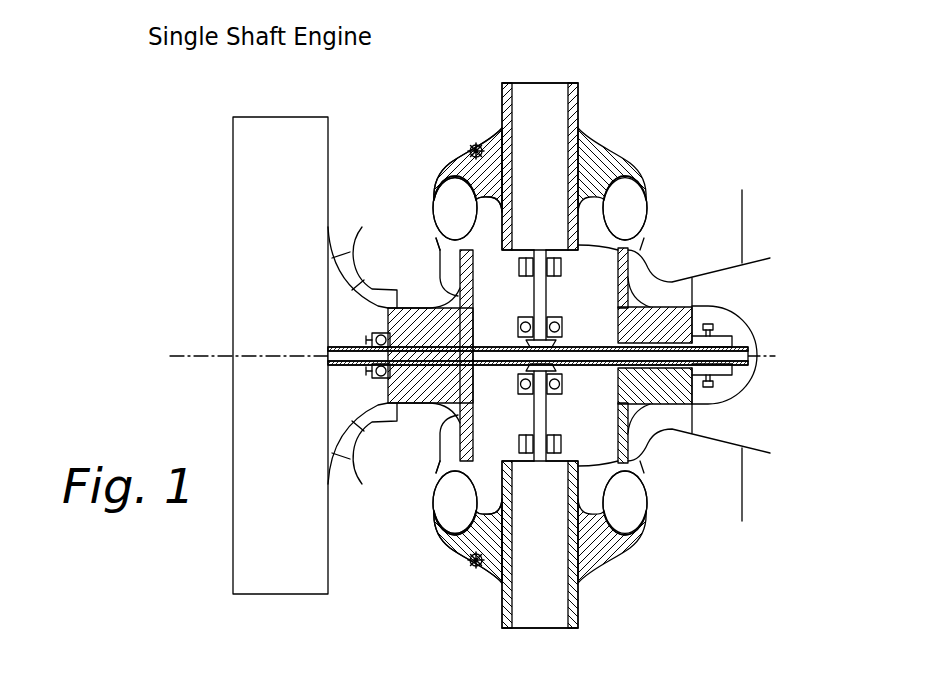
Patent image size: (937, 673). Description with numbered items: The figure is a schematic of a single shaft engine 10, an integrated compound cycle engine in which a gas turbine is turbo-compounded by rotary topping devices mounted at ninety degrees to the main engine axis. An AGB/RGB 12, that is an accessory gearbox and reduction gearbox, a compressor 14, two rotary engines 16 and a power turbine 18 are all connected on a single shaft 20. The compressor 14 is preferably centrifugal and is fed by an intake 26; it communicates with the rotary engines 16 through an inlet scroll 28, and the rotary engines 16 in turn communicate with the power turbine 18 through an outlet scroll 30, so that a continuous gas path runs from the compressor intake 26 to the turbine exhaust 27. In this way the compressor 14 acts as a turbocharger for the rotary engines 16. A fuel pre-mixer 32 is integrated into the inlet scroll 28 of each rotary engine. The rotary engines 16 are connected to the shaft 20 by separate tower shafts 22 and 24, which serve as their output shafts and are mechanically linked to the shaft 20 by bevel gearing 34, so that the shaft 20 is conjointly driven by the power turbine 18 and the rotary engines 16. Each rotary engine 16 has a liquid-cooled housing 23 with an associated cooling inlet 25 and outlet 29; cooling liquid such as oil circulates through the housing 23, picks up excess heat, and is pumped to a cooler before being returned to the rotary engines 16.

The single shaft engine 10 is at (692, 138).
The AGB/RGB 12 is at (232, 245).
The compressor 14 is at (433, 410).
The rotary engines 16 is at (557, 153).
The power turbine 18 is at (658, 414).
The shaft 20 is at (584, 346).
The tower shaft 22 is at (542, 300).
The housing 23 is at (621, 258).
The tower shaft 24 is at (547, 405).
The cooling inlet 25 is at (512, 252).
The intake 26 is at (356, 234).
The turbine exhaust 27 is at (742, 212).
The inlet scroll 28 is at (446, 194).
The cooling outlet 29 is at (512, 82).
The outlet scroll 30 is at (633, 212).
The fuel pre-mixer 32 is at (472, 149).
The bevel gearing 34 is at (561, 370).